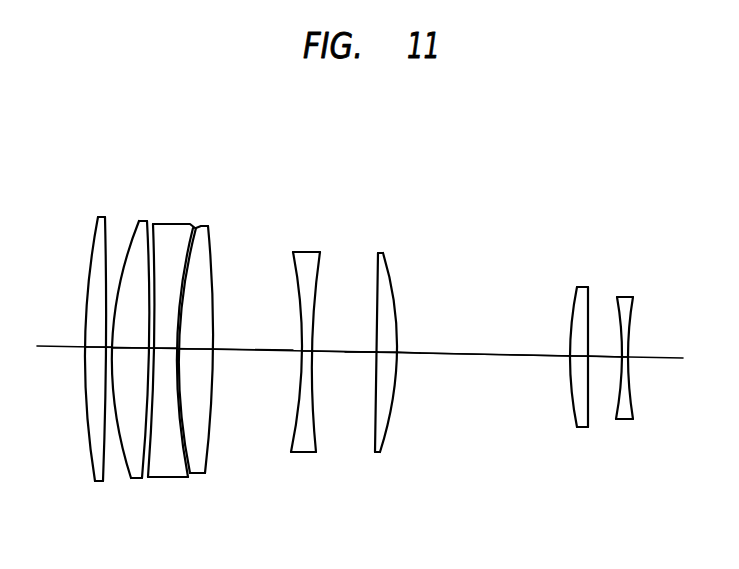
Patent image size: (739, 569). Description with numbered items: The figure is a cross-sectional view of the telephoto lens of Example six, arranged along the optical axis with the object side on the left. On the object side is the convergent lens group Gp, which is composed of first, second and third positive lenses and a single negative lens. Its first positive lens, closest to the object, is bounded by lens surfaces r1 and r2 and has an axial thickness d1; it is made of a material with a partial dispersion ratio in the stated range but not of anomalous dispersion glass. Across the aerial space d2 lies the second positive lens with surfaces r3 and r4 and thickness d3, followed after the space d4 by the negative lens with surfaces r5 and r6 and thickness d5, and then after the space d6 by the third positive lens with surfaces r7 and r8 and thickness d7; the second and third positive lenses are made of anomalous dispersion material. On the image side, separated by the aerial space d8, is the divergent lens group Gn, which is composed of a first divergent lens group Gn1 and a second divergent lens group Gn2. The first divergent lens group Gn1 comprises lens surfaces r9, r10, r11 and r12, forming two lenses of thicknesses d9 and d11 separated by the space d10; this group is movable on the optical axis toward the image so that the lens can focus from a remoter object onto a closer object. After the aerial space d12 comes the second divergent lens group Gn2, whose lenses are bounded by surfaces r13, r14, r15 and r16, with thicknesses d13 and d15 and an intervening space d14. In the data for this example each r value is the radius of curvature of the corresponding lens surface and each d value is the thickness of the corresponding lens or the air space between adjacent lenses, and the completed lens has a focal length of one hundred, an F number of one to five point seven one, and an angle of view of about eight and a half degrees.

The convergent lens group Gp is at (54, 127).
The divergent lens group Gn is at (654, 137).
The first divergent lens group Gn1 is at (262, 163).
The second divergent lens group Gn2 is at (528, 168).
The first lens surface r1 is at (98, 216).
The second lens surface r2 is at (104, 216).
The third lens surface r3 is at (138, 220).
The fourth lens surface r4 is at (148, 220).
The fifth lens surface r5 is at (152, 223).
The sixth lens surface r6 is at (193, 227).
The seventh lens surface r7 is at (205, 226).
The eighth lens surface r8 is at (211, 226).
The ninth lens surface r9 is at (294, 251).
The tenth lens surface r10 is at (319, 251).
The eleventh lens surface r11 is at (378, 252).
The twelfth lens surface r12 is at (383, 252).
The thirteenth lens surface r13 is at (578, 286).
The fourteenth lens surface r14 is at (588, 286).
The fifteenth lens surface r15 is at (618, 296).
The sixteenth lens surface r16 is at (632, 296).
The first lens thickness d1 is at (93, 352).
The first aerial space d2 is at (110, 352).
The second lens thickness d3 is at (132, 352).
The second aerial space d4 is at (152, 352).
The negative lens thickness d5 is at (165, 352).
The third aerial space d6 is at (195, 352).
The third positive lens thickness d7 is at (255, 353).
The aerial space between lens groups d8 is at (303, 354).
The lens thickness in first divergent group d9 is at (330, 354).
The aerial space in first divergent group d10 is at (343, 354).
The lens thickness in first divergent group d11 is at (397, 354).
The aerial space between divergent groups d12 is at (480, 356).
The lens thickness in second divergent group d13 is at (583, 359).
The aerial space in second divergent group d14 is at (605, 359).
The lens thickness in second divergent group d15 is at (627, 359).